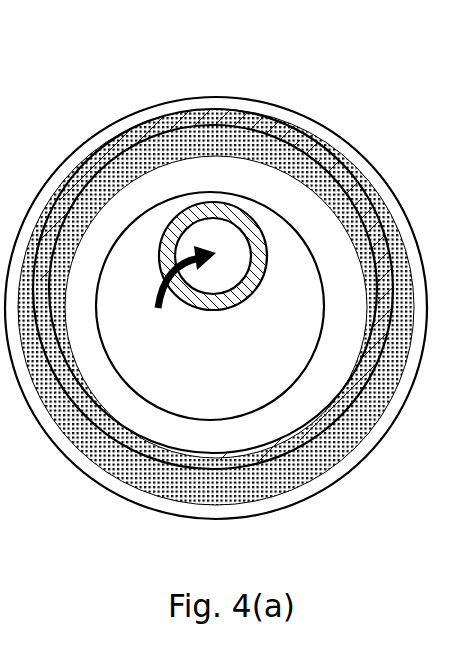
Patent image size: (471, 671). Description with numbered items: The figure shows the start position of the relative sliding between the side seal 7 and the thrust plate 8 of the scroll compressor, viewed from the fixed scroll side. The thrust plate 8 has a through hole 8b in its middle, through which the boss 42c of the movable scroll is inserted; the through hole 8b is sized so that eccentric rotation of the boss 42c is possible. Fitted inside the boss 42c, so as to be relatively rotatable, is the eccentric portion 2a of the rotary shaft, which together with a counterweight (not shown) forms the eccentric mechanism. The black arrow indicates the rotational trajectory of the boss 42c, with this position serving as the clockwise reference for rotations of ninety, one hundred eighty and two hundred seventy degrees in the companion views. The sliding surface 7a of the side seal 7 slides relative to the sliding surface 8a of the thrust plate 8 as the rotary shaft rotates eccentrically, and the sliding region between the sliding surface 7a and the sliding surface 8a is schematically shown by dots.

The thrust plate 8 is at (176, 91).
The sliding surface 8a is at (210, 105).
The side seal 7 is at (268, 112).
The sliding surface 7a is at (316, 152).
The through hole 8b is at (128, 370).
The eccentric portion 2a is at (203, 278).
The boss 42c is at (263, 282).